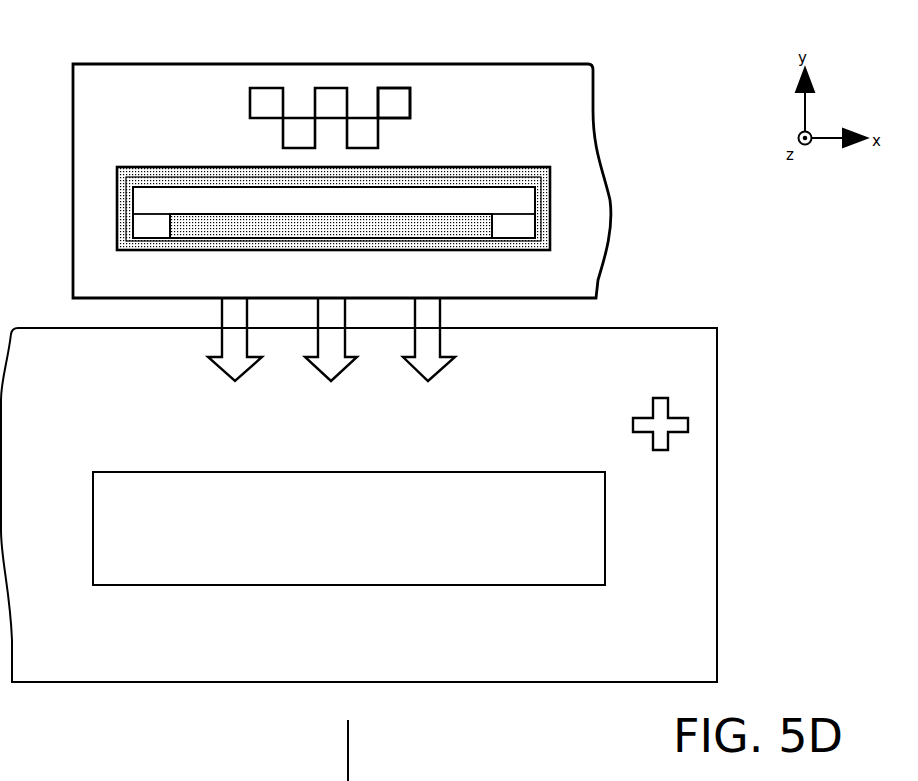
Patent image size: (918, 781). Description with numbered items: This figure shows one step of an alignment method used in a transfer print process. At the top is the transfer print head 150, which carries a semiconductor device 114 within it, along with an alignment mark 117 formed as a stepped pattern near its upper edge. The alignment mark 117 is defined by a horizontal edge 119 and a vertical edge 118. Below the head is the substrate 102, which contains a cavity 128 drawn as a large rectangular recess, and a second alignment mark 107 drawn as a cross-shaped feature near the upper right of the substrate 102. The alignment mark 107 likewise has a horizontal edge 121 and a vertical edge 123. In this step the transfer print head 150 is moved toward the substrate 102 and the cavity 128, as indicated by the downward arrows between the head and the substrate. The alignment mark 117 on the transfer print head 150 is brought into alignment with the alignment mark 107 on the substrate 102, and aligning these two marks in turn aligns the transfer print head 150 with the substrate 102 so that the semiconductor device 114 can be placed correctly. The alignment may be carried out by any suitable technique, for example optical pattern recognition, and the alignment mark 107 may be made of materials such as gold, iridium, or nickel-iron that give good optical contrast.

The transfer print head 150 is at (577, 101).
The alignment mark 117 is at (370, 81).
The horizontal edge 119 is at (383, 87).
The vertical edge 118 is at (410, 100).
The semiconductor device 114 is at (565, 212).
The substrate 102 is at (688, 614).
The cavity 128 is at (116, 508).
The alignment mark 107 is at (699, 414).
The horizontal edge 121 is at (657, 408).
The vertical edge 123 is at (667, 412).